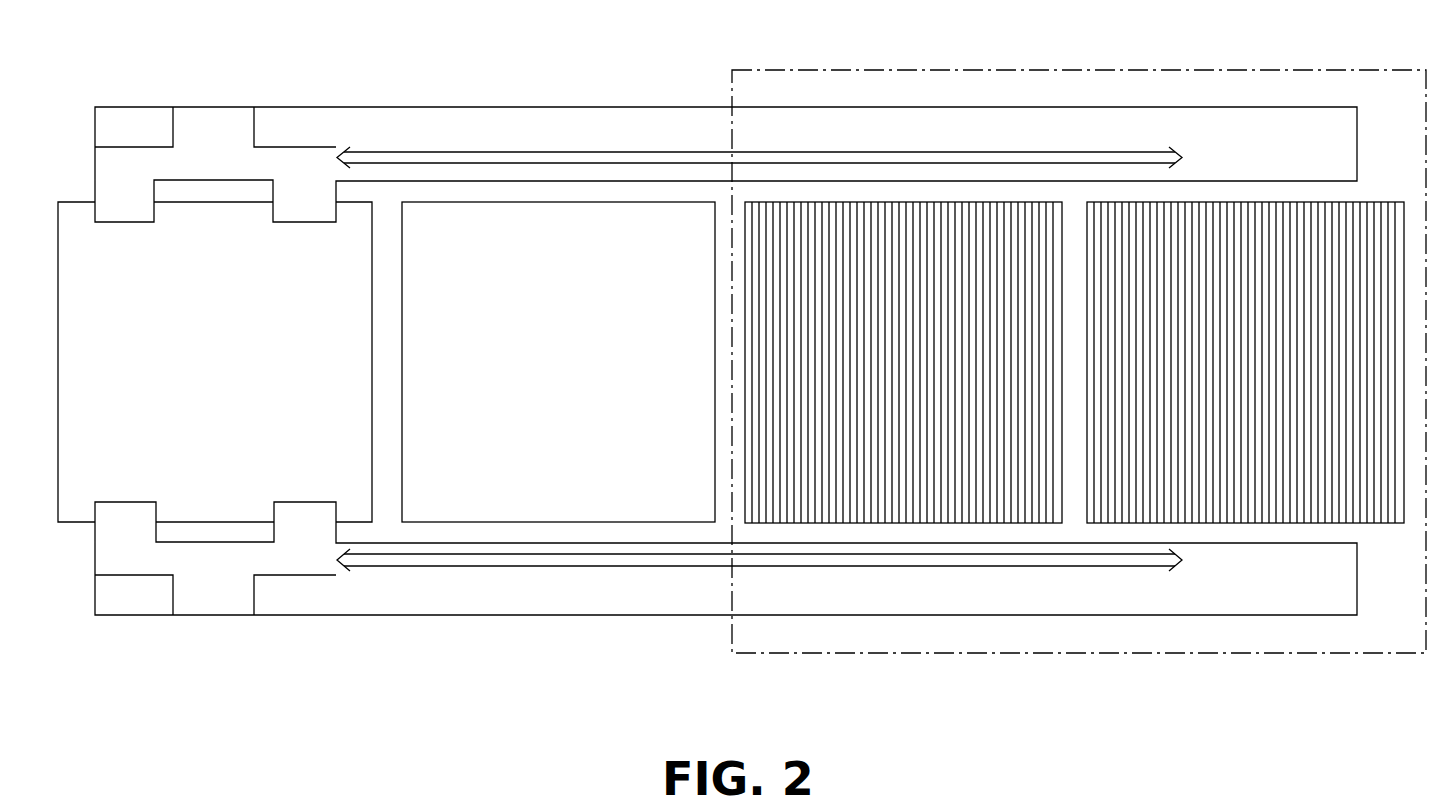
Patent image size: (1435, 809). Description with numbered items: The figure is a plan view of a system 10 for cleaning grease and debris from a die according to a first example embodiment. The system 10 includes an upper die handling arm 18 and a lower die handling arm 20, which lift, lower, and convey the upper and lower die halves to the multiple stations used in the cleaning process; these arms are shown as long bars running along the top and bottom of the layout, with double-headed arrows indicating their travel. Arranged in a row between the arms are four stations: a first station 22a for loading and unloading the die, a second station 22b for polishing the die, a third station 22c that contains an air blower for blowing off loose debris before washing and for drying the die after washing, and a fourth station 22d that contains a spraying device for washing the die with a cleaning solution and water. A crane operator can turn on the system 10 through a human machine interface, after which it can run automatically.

The system 10 is at (418, 75).
The upper die handling arm 18 is at (230, 107).
The lower die handling arm 20 is at (153, 576).
The first station 22a is at (359, 522).
The second station 22b is at (487, 522).
The third station 22c is at (960, 523).
The fourth station 22d is at (1237, 523).